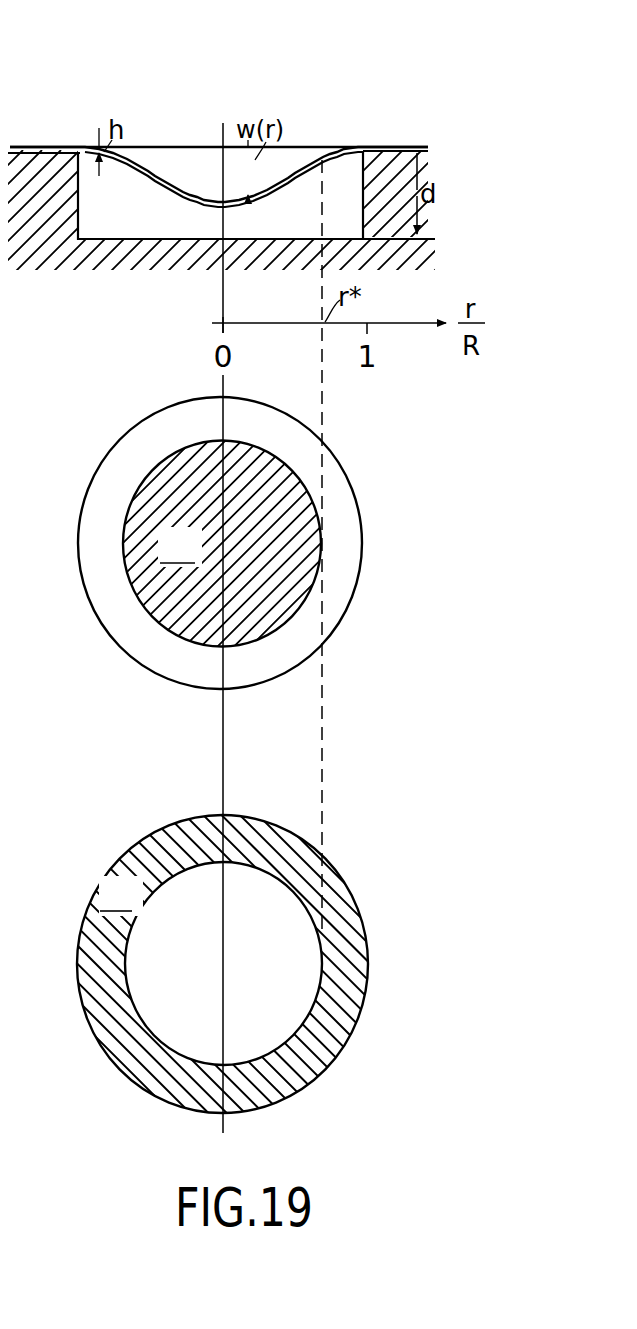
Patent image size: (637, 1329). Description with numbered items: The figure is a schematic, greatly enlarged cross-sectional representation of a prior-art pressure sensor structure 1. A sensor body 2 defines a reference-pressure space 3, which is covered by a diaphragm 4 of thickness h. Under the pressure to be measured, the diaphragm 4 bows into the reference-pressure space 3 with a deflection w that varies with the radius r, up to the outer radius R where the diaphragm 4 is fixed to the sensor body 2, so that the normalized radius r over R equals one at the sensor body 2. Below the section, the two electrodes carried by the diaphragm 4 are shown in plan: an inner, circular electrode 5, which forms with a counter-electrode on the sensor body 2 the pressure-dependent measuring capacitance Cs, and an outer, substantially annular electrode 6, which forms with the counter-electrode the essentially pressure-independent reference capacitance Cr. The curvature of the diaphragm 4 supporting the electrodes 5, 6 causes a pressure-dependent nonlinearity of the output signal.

The pressure sensor structure 1 is at (437, 131).
The sensor body 2 is at (386, 210).
The reference-pressure space 3 is at (348, 168).
The diaphragm 4 is at (312, 160).
The inner circular electrode 5 is at (287, 554).
The outer annular electrode 6 is at (347, 977).